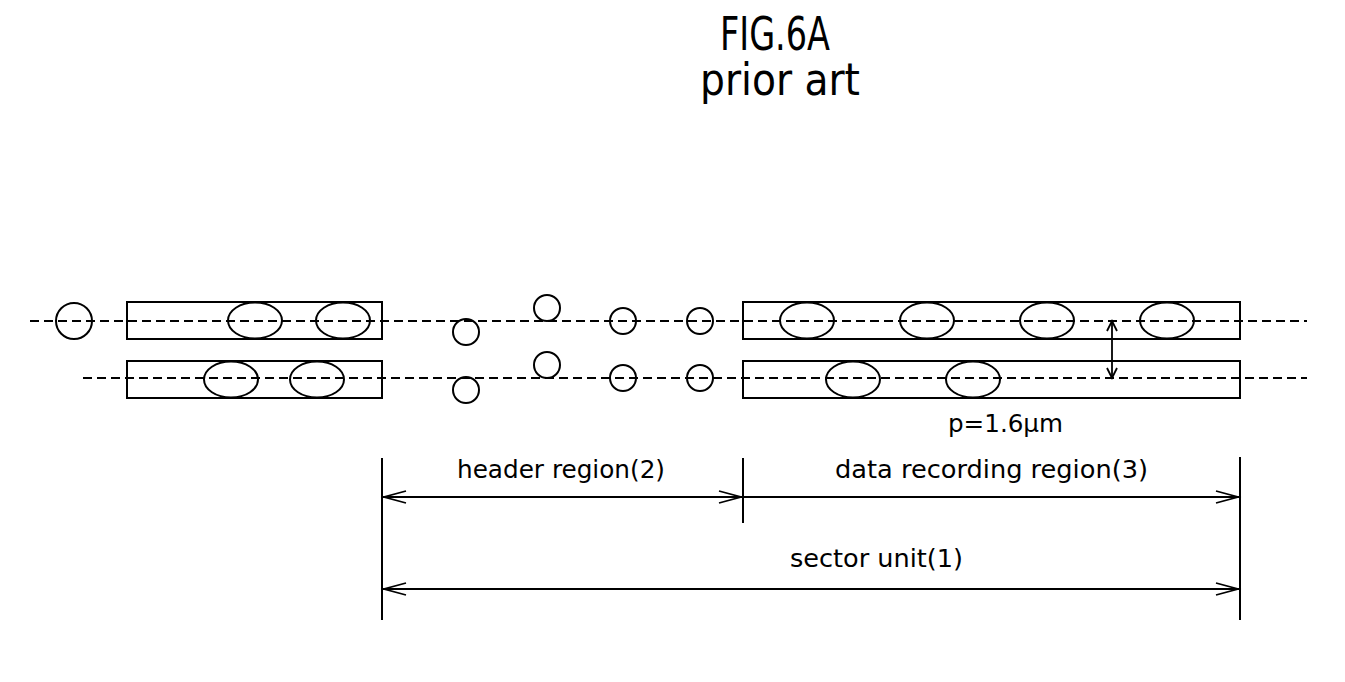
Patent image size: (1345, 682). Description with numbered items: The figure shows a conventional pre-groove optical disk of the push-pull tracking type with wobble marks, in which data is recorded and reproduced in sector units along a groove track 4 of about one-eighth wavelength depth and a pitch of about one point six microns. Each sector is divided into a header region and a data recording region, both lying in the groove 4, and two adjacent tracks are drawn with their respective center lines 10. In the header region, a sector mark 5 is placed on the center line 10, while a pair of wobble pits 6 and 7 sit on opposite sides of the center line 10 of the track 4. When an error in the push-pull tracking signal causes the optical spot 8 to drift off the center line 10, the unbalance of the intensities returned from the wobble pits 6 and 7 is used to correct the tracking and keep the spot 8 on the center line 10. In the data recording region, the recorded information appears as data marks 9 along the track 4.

The groove track 4 is at (988, 328).
The sector mark 5 is at (727, 298).
The wobble pit 6 is at (468, 320).
The wobble pit 7 is at (547, 295).
The optical spot 8 is at (80, 303).
The data mark 9 is at (940, 300).
The center line 10 is at (420, 318).